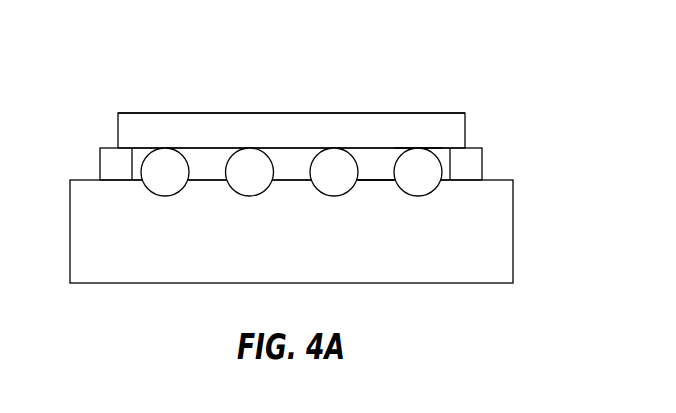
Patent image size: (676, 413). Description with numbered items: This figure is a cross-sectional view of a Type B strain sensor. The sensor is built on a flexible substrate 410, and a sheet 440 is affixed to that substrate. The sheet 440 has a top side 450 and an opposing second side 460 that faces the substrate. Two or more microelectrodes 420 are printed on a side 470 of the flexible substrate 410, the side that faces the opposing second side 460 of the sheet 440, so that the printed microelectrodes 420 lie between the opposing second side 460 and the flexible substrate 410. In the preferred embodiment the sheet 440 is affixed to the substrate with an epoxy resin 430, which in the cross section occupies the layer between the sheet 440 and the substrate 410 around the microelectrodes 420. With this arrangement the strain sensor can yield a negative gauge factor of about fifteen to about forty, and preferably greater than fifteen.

The flexible substrate 410 is at (513, 232).
The microelectrodes 420 is at (247, 163).
The epoxy resin 430 is at (482, 169).
The sheet 440 is at (142, 112).
The top side 450 is at (365, 108).
The opposing second side 460 is at (404, 143).
The side 470 is at (383, 188).